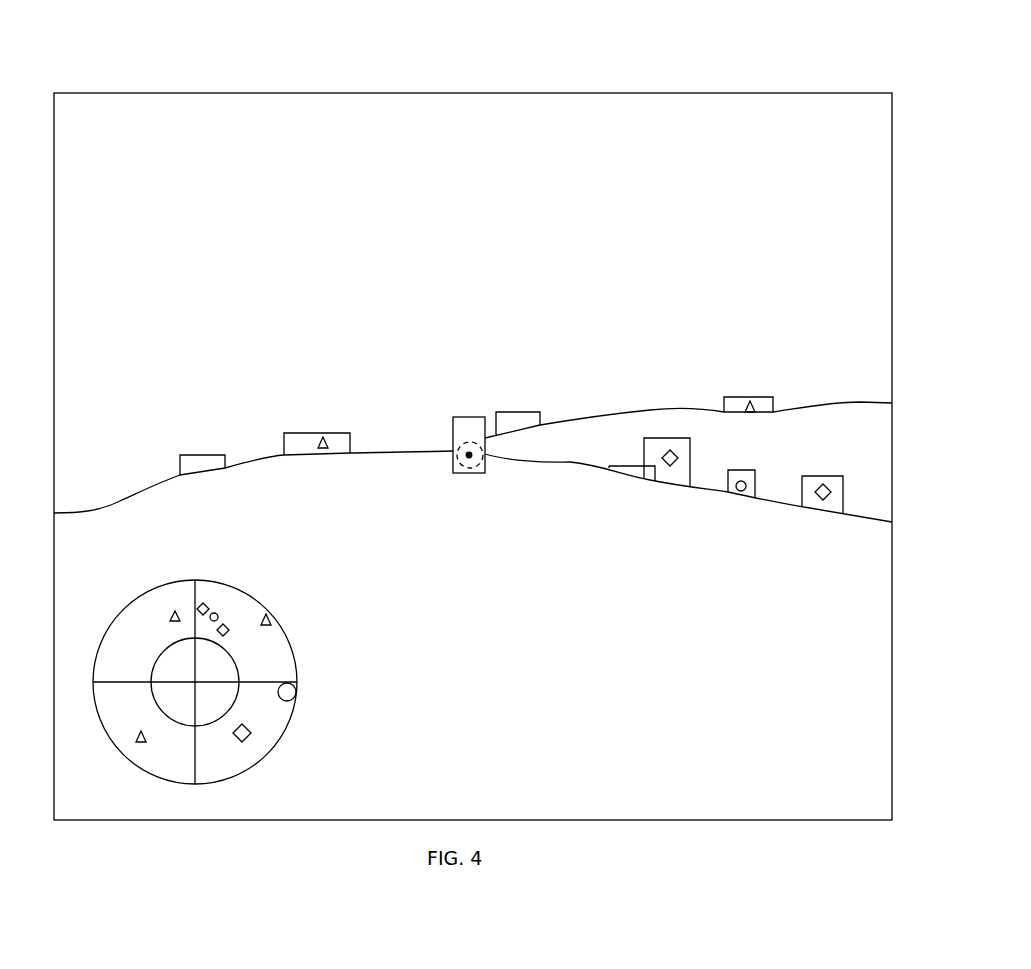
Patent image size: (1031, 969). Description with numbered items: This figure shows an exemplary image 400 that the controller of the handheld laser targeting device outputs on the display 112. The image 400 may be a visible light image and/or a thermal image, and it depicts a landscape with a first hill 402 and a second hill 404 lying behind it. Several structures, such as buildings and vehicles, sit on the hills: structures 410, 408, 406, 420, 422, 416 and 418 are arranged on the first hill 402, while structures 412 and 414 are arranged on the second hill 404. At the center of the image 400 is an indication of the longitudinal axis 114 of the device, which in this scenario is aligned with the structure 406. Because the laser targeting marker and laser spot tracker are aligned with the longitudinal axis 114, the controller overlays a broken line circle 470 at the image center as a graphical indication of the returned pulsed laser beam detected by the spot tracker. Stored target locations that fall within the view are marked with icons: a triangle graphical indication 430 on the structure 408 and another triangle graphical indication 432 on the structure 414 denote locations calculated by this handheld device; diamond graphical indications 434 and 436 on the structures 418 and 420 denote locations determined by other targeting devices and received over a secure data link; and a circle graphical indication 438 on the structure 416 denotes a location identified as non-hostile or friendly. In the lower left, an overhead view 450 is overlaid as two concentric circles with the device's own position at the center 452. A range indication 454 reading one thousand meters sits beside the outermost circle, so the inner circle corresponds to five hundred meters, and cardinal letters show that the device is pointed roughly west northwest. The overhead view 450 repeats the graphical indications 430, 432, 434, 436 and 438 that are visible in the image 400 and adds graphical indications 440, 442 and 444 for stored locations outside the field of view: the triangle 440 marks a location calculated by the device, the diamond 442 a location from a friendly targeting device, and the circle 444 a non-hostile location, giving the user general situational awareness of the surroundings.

The display 112 is at (862, 90).
The image 400 is at (892, 147).
The first hill 402 is at (137, 493).
The second hill 404 is at (635, 410).
The structure 406 is at (467, 417).
The structure 408 is at (297, 433).
The structure 410 is at (193, 455).
The structure 412 is at (522, 412).
The structure 414 is at (738, 397).
The structure 416 is at (742, 470).
The structure 418 is at (832, 476).
The structure 420 is at (678, 438).
The structure 422 is at (628, 466).
The graphical indication 430 is at (325, 440).
The graphical indication 432 is at (757, 407).
The graphical indication 434 is at (675, 464).
The graphical indication 436 is at (820, 499).
The graphical indication 438 is at (742, 491).
The graphical indication 440 is at (141, 743).
The graphical indication 442 is at (258, 718).
The graphical indication 444 is at (294, 698).
The overhead view 450 is at (211, 570).
The center 452 is at (184, 674).
The range indication 454 is at (310, 752).
The broken line circle 470 is at (461, 468).
The longitudinal axis 114 is at (471, 462).